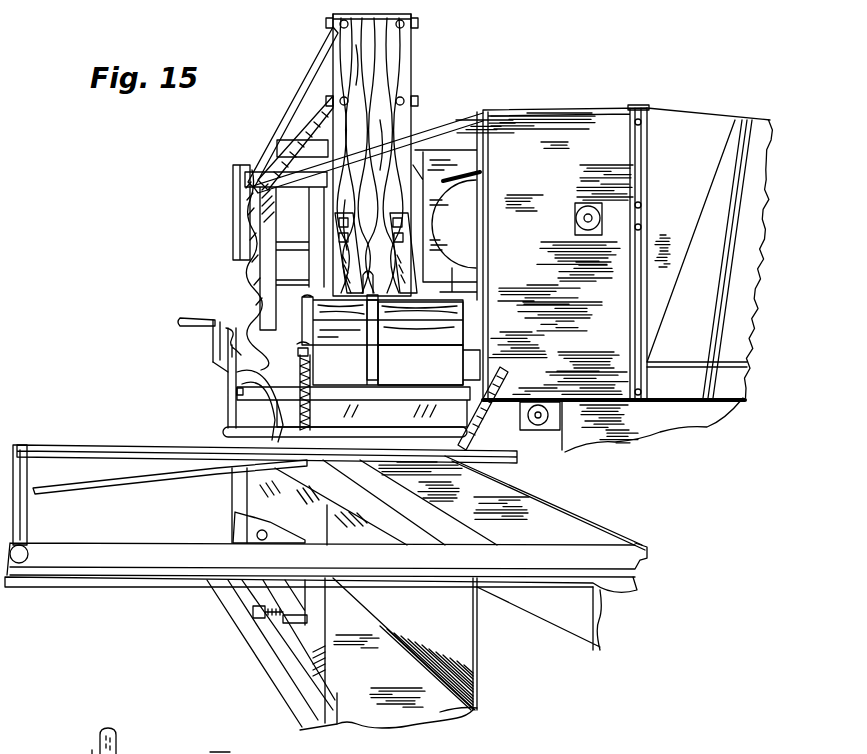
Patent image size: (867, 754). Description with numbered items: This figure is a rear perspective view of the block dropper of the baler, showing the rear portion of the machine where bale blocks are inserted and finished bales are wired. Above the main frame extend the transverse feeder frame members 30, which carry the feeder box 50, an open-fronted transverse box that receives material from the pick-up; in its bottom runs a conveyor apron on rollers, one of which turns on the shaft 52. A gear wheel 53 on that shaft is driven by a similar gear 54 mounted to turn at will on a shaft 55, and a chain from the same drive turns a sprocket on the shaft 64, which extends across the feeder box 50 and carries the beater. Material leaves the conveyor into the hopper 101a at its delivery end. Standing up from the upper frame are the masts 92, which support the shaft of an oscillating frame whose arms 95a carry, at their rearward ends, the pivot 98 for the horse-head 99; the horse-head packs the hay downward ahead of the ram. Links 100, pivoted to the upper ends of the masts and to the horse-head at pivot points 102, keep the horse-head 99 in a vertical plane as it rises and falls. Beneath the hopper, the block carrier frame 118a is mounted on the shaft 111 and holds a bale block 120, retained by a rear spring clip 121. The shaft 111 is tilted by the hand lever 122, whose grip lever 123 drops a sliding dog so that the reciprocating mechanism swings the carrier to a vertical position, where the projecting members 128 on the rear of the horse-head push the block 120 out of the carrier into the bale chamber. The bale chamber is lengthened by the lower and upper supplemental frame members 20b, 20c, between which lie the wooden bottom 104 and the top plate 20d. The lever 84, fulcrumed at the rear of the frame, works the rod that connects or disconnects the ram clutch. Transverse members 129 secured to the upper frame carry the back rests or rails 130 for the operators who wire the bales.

The pivot point 102 is at (416, 25).
The horse-head 99 is at (397, 68).
The pivot 98 is at (417, 102).
The links 100 is at (322, 63).
The arms 95a is at (305, 127).
The masts 92 is at (236, 180).
The hopper 101a is at (248, 235).
The projecting members 128 is at (350, 265).
The spring clip 121 is at (370, 325).
The hand lever 122 is at (179, 319).
The grip lever 123 is at (224, 333).
The shaft 111 is at (226, 428).
The block 120 is at (410, 305).
The carrier frame 118a is at (450, 327).
The feeder frame members 30 is at (680, 400).
The shaft 64 is at (600, 218).
The transverse box 50 is at (730, 343).
The shaft 52 is at (527, 418).
The back rests 130 is at (25, 535).
The lever 84 is at (118, 488).
The transversely extending members 129 is at (110, 557).
The top plate 20d is at (566, 517).
The supplemental frame members 20c is at (590, 622).
The supplemental frame members 20b is at (515, 722).
The bottom 104 is at (441, 715).
The gear wheel 53 is at (73, 744).
The gear 54 is at (116, 735).
The shaft 55 is at (233, 740).